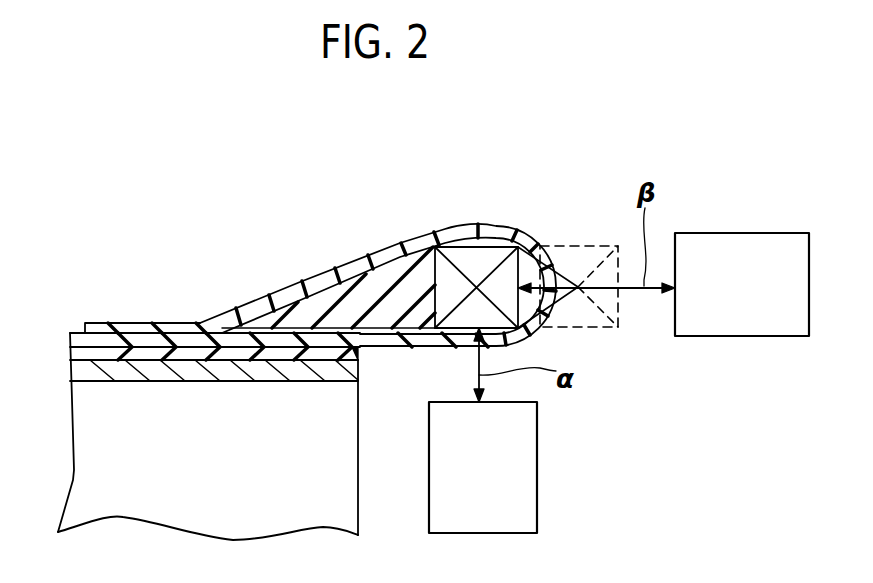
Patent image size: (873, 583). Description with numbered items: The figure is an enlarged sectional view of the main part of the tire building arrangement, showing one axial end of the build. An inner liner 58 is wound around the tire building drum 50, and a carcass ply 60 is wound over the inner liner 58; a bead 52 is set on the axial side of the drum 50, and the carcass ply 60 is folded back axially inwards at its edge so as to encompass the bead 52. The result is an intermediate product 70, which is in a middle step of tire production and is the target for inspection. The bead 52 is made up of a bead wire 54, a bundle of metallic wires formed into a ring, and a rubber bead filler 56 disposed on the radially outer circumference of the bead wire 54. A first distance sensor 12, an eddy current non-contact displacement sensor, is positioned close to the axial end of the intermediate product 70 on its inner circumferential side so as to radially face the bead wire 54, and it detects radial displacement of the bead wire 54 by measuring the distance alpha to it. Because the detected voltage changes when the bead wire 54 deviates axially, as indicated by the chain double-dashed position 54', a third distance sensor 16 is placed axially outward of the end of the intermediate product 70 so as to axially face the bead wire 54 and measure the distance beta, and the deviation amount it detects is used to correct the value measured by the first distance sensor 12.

The first distance sensor 12 is at (537, 503).
The third distance sensor 16 is at (728, 336).
The tire building drum 50 is at (125, 372).
The bead 52 is at (427, 217).
The bead wire 54 is at (476, 248).
The deviated bead wire position 54' is at (568, 245).
The rubber bead filler 56 is at (382, 282).
The inner liner 58 is at (78, 352).
The carcass ply 60 is at (193, 321).
The intermediate product 70 is at (145, 300).